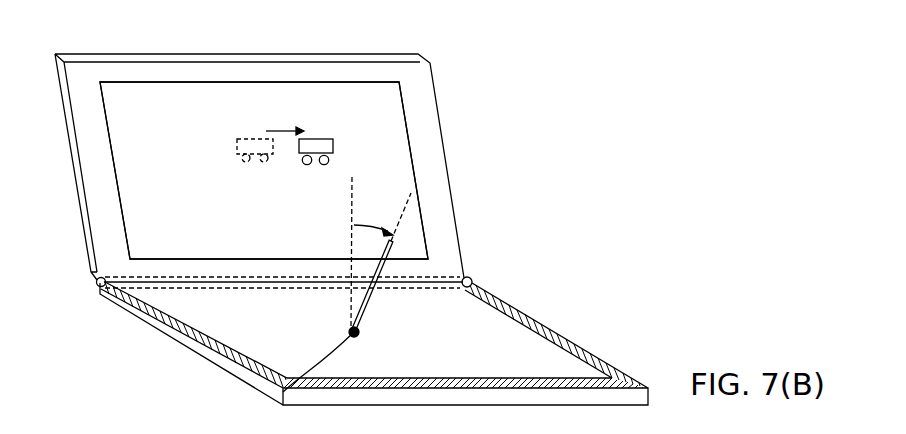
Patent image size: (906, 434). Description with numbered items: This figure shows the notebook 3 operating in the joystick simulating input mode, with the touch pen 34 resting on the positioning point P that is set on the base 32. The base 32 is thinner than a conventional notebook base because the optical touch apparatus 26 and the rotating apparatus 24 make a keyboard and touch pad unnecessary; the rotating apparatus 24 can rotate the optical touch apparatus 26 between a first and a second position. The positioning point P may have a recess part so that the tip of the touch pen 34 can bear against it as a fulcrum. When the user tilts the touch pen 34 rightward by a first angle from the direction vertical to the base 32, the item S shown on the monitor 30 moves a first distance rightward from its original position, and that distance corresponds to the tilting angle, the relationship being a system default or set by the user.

The notebook 3 is at (482, 65).
The monitor 30 is at (188, 92).
The item S is at (334, 148).
The touch pen 34 is at (393, 252).
The rotating apparatus 24 is at (97, 282).
The base 32 is at (162, 325).
The optical touch apparatus 26 is at (530, 322).
The positioning point P is at (285, 390).